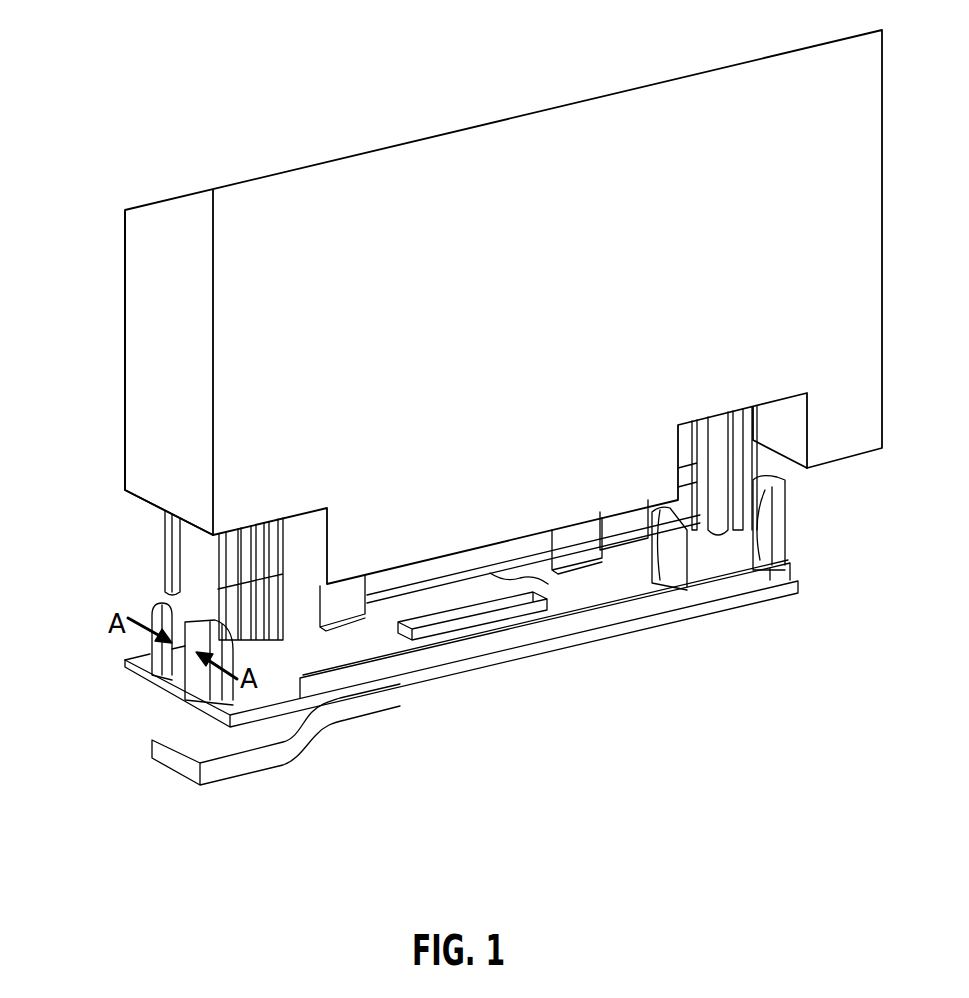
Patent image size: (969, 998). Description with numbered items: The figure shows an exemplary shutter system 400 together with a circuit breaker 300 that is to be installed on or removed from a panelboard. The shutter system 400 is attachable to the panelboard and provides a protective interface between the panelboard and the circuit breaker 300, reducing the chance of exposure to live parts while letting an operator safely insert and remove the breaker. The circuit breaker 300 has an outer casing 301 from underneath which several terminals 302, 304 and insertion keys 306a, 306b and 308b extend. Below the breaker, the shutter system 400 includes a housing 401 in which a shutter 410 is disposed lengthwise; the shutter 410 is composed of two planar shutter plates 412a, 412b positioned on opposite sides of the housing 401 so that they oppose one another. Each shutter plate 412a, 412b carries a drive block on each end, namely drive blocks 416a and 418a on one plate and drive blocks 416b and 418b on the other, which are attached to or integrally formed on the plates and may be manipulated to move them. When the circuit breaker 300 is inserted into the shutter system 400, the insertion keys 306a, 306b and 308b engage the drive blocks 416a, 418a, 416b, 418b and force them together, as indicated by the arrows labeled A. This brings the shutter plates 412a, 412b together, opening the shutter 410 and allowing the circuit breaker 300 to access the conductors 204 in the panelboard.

The circuit breaker 300 is at (452, 118).
The outer casing 301 is at (140, 435).
The terminal 302 is at (354, 590).
The terminal 304 is at (580, 533).
The insertion key 306a is at (173, 556).
The insertion key 306b is at (268, 532).
The insertion key 308b is at (740, 425).
The shutter system 400 is at (572, 705).
The housing 401 is at (436, 680).
The shutter 410 is at (486, 576).
The shutter plate 412a is at (415, 604).
The shutter plate 412b is at (488, 626).
The drive block 416a is at (163, 656).
The drive block 416b is at (205, 688).
The drive block 418a is at (633, 536).
The drive block 418b is at (735, 568).
The conductors 204 is at (176, 762).